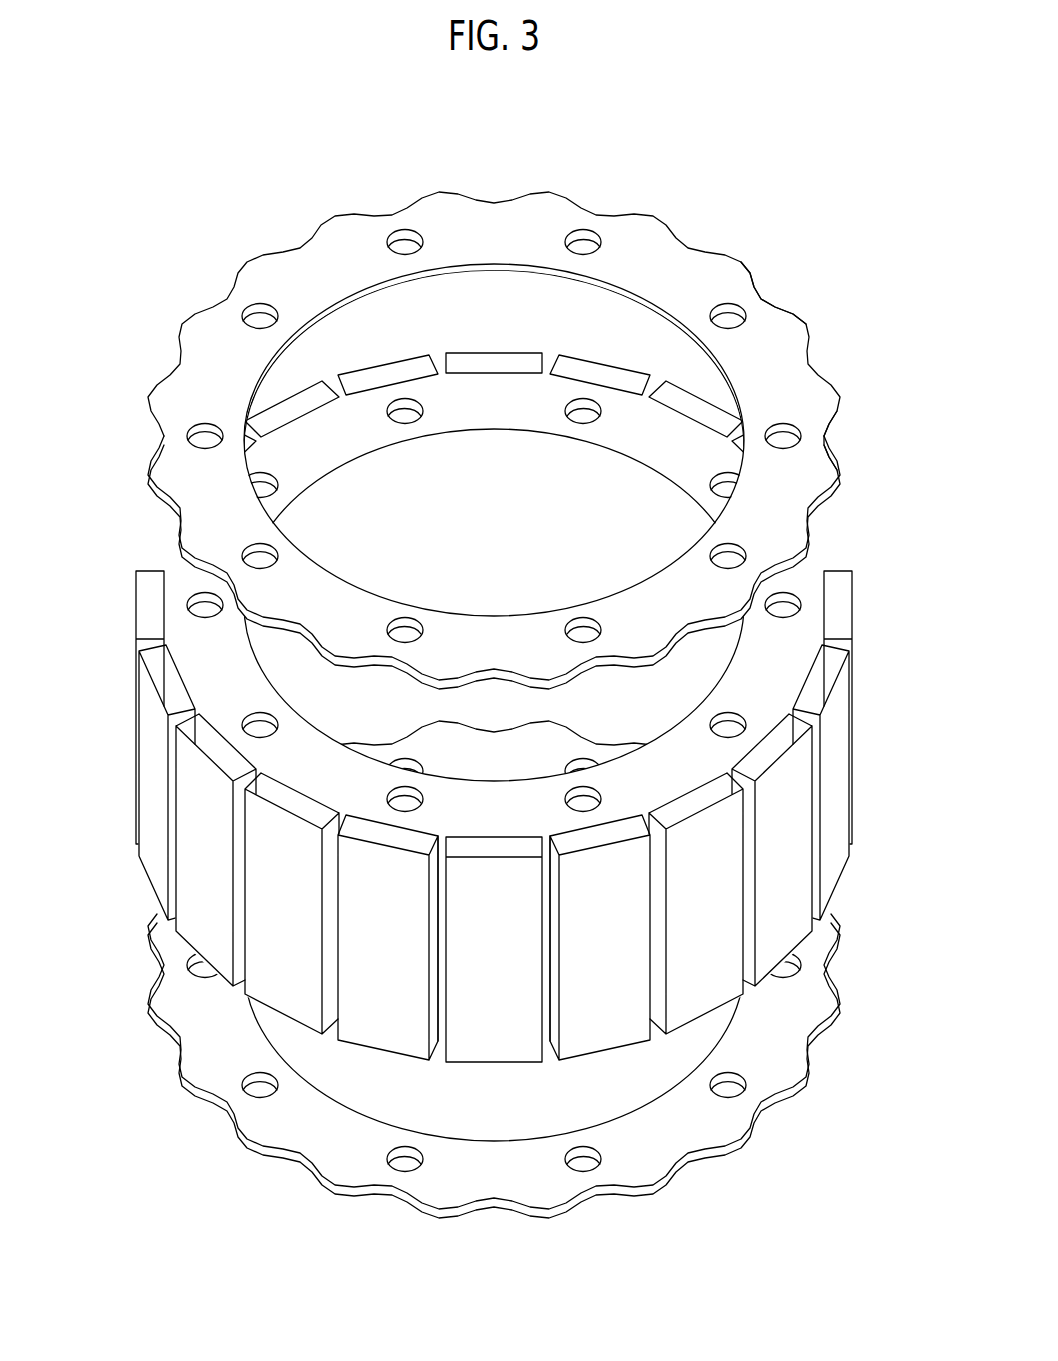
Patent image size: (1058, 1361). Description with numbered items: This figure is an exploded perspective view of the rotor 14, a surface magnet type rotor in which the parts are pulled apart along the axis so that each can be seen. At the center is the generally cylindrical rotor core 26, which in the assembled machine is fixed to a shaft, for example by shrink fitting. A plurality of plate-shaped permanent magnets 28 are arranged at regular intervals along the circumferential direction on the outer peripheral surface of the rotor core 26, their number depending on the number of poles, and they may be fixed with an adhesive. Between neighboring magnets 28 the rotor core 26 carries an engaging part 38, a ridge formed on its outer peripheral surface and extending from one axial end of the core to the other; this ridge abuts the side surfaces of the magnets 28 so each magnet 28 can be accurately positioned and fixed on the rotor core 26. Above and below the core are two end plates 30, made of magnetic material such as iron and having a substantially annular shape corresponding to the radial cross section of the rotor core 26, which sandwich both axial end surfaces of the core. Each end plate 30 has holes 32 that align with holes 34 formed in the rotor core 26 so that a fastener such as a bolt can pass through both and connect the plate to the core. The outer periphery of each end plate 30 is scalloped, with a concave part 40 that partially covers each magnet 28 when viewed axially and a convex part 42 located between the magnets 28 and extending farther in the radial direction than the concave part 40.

The rotor 14 is at (164, 163).
The rotor core 26 is at (318, 438).
The magnets 28 is at (600, 1027).
The end plates 30 is at (490, 230).
The hole 32 is at (586, 241).
The hole 34 is at (403, 410).
The engaging part 38 is at (542, 1027).
The concave part 40 is at (827, 437).
The convex part 42 is at (735, 262).